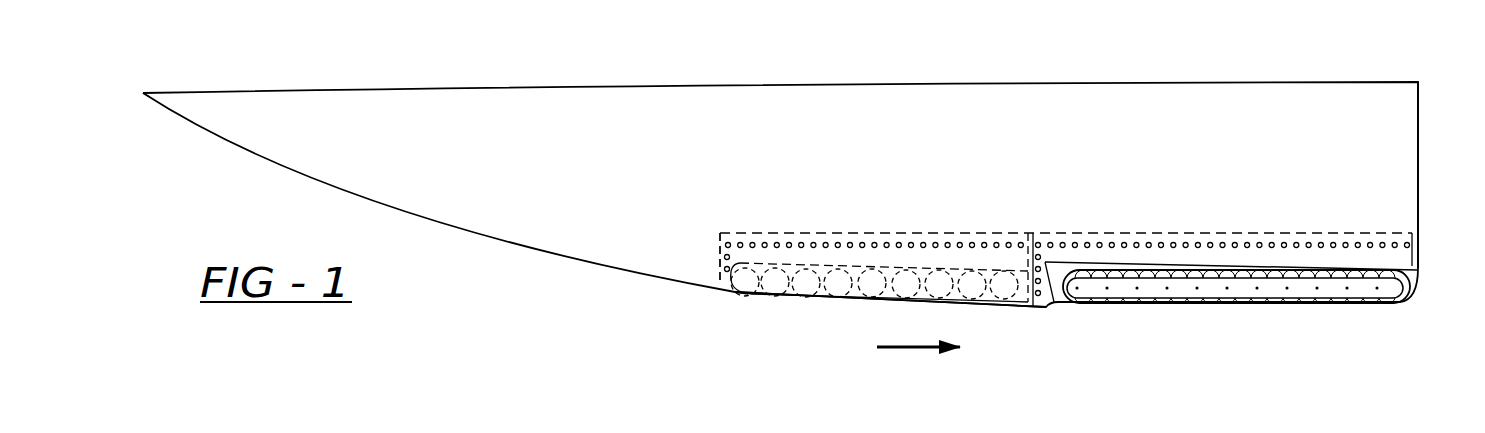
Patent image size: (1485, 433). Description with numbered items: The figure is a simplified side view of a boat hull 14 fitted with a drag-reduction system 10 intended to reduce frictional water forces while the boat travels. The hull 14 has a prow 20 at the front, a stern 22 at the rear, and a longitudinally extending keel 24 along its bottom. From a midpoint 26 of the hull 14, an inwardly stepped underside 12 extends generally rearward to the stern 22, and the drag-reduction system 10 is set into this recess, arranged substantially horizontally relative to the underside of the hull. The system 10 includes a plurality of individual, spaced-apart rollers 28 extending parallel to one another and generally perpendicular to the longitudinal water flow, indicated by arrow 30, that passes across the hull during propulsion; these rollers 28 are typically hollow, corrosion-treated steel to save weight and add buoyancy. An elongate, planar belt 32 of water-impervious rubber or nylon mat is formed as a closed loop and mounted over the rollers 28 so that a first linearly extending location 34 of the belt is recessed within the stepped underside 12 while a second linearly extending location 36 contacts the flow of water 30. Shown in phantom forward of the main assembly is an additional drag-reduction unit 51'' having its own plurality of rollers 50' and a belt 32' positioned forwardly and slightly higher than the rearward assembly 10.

The drag-reduction system 10 is at (1207, 306).
The inwardly stepped underside 12 is at (1062, 306).
The boat hull 14 is at (762, 82).
The prow 20 is at (162, 110).
The stern 22 is at (1421, 162).
The keel 24 is at (556, 254).
The midpoint 26 is at (1034, 306).
The rollers 28 is at (1158, 303).
The longitudinal water flow 30 is at (893, 350).
The belt 32 is at (1235, 334).
The belt 32' is at (879, 305).
The first linearly extending location 34 is at (1376, 268).
The second linearly extending location 36 is at (1358, 306).
The rollers 50' is at (874, 324).
The additional drag-reduction unit 51'' is at (716, 326).